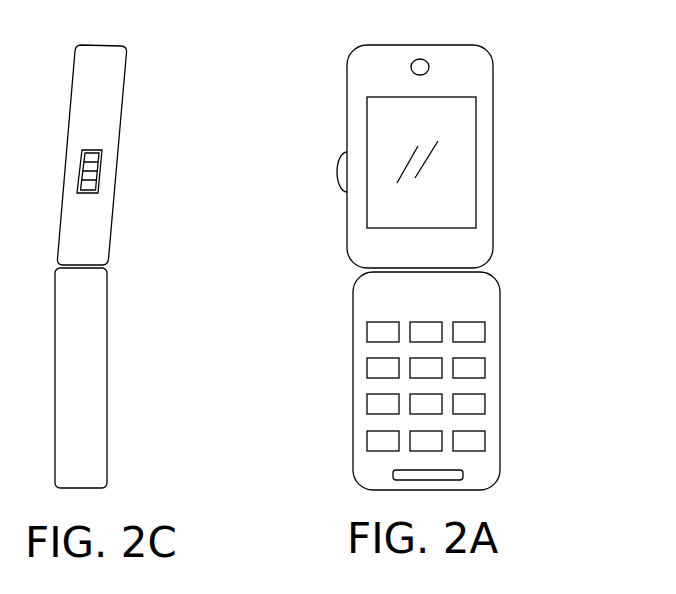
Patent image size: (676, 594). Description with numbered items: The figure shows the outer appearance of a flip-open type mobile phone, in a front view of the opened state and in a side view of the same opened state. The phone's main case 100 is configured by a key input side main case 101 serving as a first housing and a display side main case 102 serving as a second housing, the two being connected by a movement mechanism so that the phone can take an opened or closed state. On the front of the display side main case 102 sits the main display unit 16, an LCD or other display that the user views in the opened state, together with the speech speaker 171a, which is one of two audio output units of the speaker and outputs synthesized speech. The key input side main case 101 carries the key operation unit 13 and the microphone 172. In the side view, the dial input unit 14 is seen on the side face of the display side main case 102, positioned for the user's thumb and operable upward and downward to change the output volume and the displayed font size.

In FIG. 2C, the dial input unit 14 is at (102, 173).
In FIG. 2A, the dial input unit 14 is at (337, 173).
In FIG. 2A, the main display unit 16 is at (477, 163).
In FIG. 2A, the key operation unit 13 is at (505, 325).
In FIG. 2A, the main case 100 is at (383, 248).
In FIG. 2A, the key input side main case 101 is at (411, 381).
In FIG. 2A, the display side main case 102 is at (379, 142).
In FIG. 2A, the speech speaker 171a is at (415, 59).
In FIG. 2A, the microphone 172 is at (392, 473).